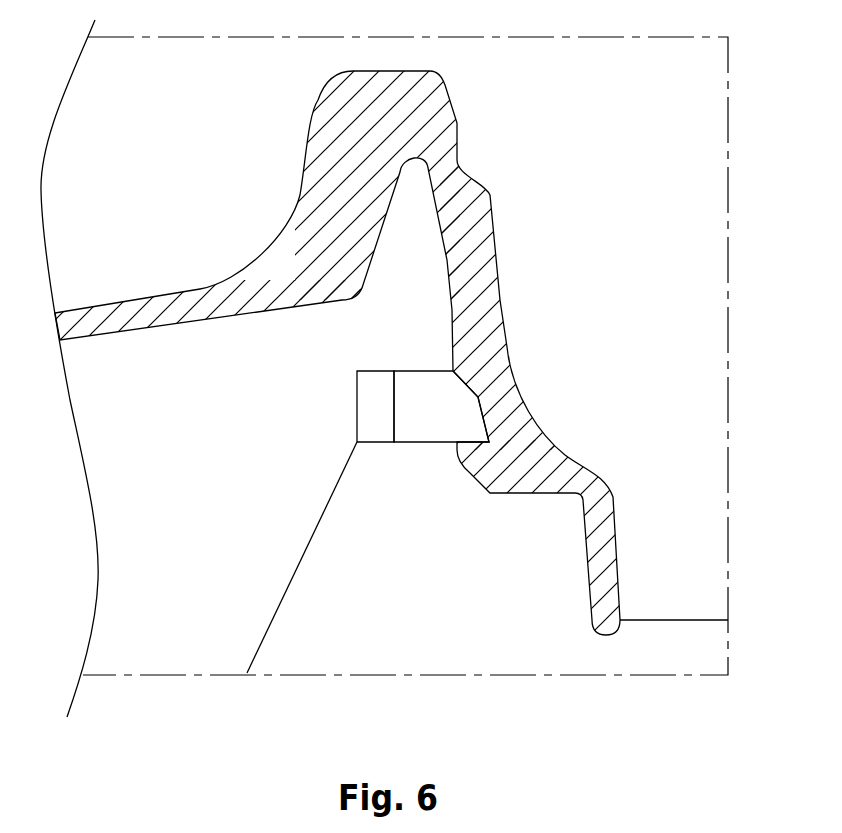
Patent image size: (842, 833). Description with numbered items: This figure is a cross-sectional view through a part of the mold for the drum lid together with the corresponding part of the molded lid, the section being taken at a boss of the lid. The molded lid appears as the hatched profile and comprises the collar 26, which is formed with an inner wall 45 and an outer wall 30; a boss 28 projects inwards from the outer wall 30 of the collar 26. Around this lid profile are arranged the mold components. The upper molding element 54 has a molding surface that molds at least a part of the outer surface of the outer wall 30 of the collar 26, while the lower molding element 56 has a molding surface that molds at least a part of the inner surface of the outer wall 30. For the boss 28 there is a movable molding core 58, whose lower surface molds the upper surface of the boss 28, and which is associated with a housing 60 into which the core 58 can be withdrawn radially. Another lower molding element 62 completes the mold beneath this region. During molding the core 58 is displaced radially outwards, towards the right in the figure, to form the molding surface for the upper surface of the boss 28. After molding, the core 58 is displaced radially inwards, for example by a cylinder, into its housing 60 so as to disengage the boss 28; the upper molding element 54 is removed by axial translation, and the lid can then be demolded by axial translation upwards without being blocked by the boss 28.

The collar 26 is at (490, 150).
The boss 28 is at (467, 453).
The outer wall 30 is at (467, 260).
The inner wall 45 is at (363, 172).
The upper molding element 54 is at (630, 250).
The lower molding element 56 is at (407, 303).
The movable molding core 58 is at (428, 407).
The housing 60 is at (373, 410).
The lower molding element 62 is at (361, 557).